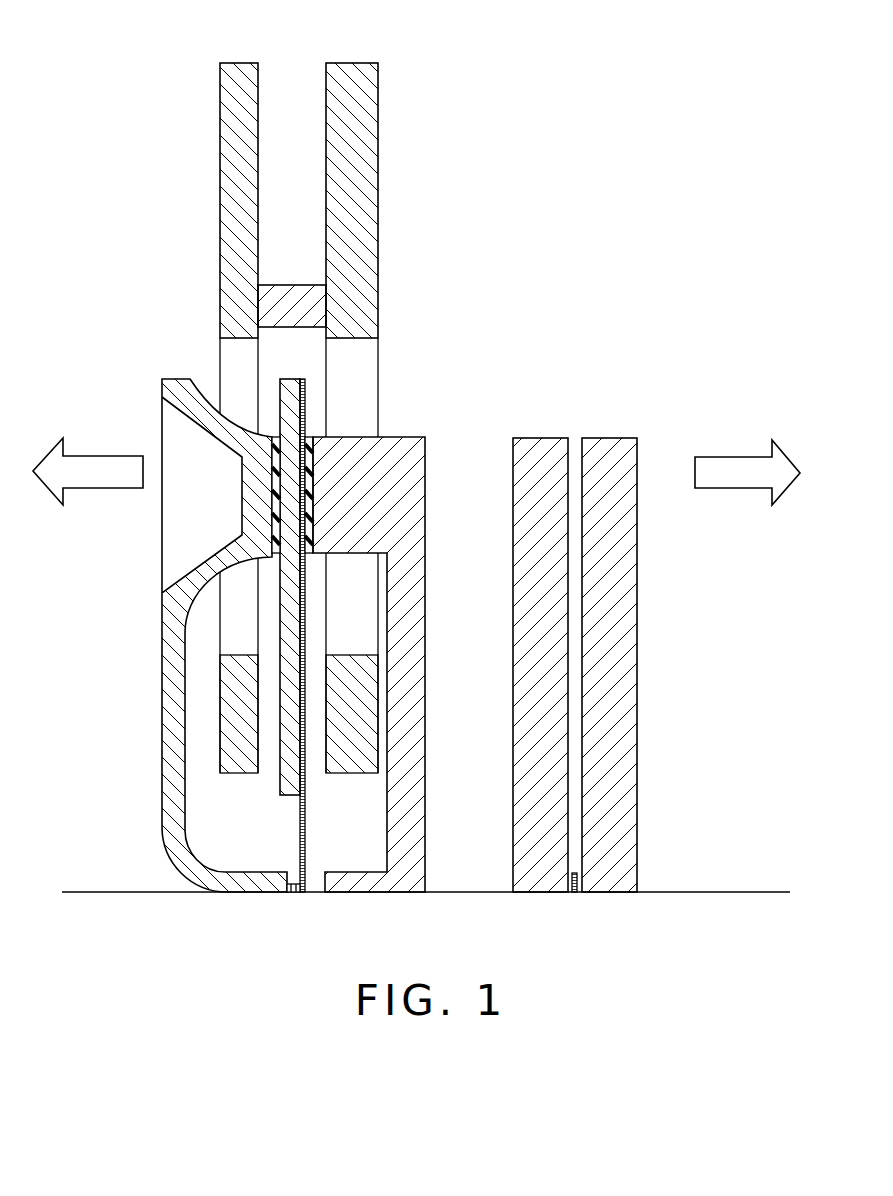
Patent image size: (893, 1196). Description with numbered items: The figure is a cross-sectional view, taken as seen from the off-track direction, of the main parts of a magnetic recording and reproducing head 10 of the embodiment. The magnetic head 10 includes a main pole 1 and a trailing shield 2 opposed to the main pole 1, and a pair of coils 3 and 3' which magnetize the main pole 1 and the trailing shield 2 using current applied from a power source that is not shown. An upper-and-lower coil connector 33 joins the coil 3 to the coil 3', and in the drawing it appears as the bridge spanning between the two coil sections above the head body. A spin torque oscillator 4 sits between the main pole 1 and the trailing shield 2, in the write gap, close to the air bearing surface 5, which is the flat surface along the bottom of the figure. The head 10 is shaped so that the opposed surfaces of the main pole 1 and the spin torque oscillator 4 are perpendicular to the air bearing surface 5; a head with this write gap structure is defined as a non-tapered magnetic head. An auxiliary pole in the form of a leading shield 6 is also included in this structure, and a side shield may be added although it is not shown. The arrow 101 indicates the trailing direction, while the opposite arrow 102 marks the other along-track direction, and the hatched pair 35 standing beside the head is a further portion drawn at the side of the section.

The main pole 1 is at (305, 388).
The trailing shield 2 is at (162, 822).
The coil 3 is at (222, 418).
The coil 3' is at (373, 418).
The upper-and-lower coil connector 33 is at (300, 300).
The magnetic head 10 is at (303, 393).
The pressing members 35 is at (490, 420).
The spin torque oscillator 4 is at (296, 893).
The air bearing surface 5 is at (722, 895).
The leading shield 6 is at (417, 845).
The trailing direction 101 is at (107, 456).
The second direction 102 is at (738, 456).